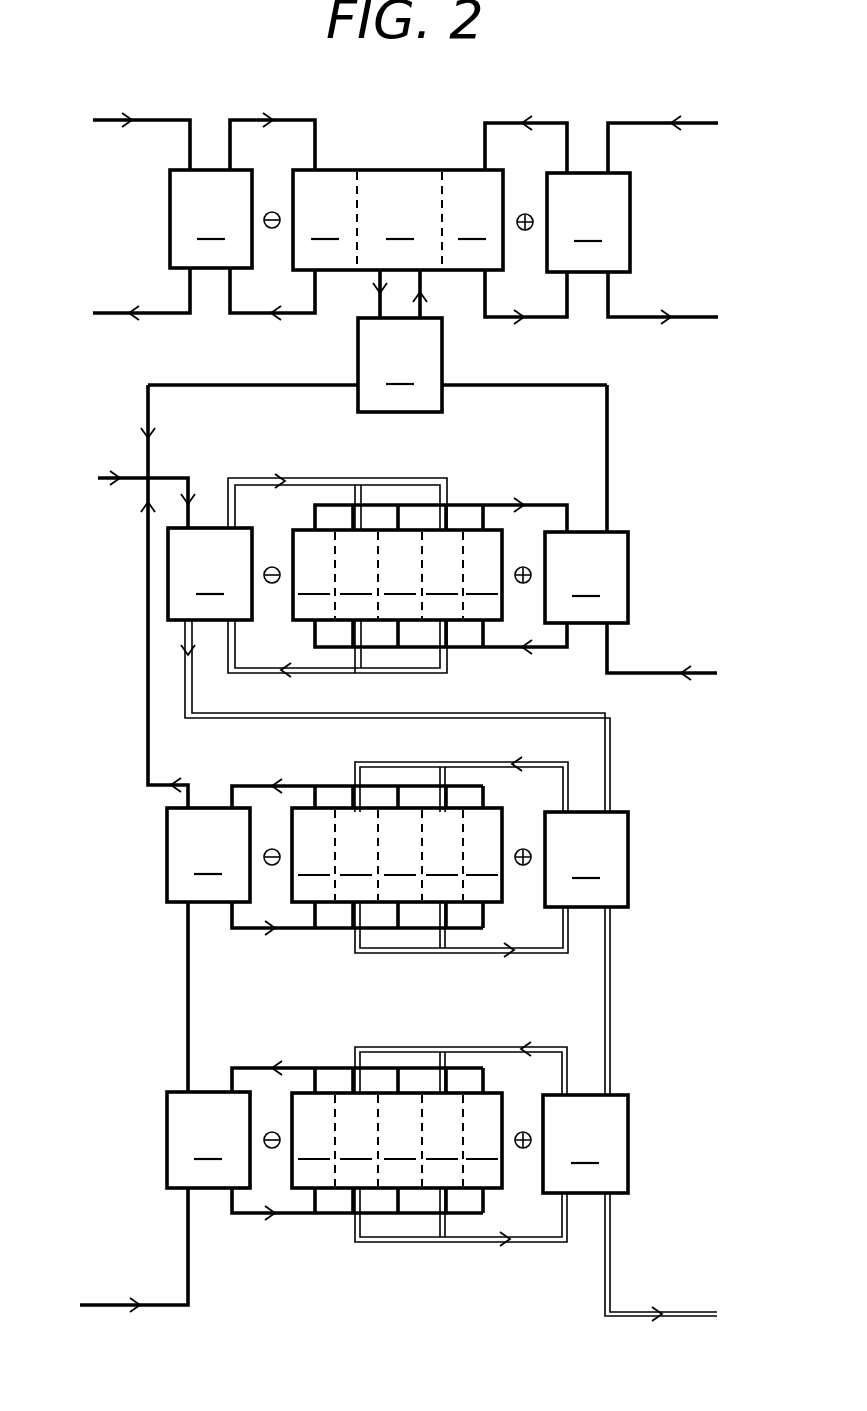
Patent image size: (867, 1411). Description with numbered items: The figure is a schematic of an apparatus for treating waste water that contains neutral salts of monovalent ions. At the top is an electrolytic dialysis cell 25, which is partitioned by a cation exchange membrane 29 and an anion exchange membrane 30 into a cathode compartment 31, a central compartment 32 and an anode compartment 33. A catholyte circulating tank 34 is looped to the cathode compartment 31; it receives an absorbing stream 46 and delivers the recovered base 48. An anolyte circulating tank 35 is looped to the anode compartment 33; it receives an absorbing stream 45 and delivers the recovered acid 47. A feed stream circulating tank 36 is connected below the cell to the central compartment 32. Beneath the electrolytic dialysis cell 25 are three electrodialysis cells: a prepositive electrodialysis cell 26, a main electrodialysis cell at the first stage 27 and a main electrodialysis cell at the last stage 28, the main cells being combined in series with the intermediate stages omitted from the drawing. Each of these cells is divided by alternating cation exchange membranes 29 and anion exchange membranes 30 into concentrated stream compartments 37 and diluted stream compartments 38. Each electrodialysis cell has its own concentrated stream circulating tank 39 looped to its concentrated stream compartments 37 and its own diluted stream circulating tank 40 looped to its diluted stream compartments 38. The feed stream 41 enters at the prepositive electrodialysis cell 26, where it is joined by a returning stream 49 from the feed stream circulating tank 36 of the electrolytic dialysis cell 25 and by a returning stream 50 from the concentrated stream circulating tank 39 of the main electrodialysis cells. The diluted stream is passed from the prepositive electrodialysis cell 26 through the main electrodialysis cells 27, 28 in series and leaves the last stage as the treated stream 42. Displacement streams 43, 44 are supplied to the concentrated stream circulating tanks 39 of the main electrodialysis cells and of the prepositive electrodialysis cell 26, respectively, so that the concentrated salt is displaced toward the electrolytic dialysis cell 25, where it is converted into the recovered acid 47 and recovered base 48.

The electrolytic dialysis cell 25 is at (410, 170).
The prepositive electrodialysis cell 26 is at (453, 528).
The main electrodialysis cell at the first stage 27 is at (340, 808).
The main electrodialysis cell at the last stage 28 is at (340, 1093).
The cation exchange membrane 29 is at (355, 248).
The anion exchange membrane 30 is at (443, 248).
The cathode compartment 31 is at (325, 221).
The central compartment 32 is at (400, 221).
The anode compartment 33 is at (472, 221).
The catholyte circulating tank 34 is at (211, 219).
The anolyte circulating tank 35 is at (588, 222).
The feed stream circulating tank 36 is at (400, 341).
The concentrated stream compartment 37 is at (398, 859).
The diluted stream compartment 38 is at (399, 859).
The concentrated stream circulating tank 39 is at (397, 860).
The diluted stream circulating tank 40 is at (398, 860).
The feed stream 41 is at (127, 494).
The treated stream 42 is at (677, 1261).
The displacement stream 43 is at (116, 1255).
The displacement stream 44 is at (681, 657).
The absorbing stream 45 is at (682, 139).
The absorbing stream 46 is at (123, 136).
The recovered acid 47 is at (682, 303).
The recovered base 48 is at (123, 299).
The returning stream from the feed stream circulating tank 49 is at (163, 450).
The returning stream from the concentrated stream circulating tank 50 is at (168, 500).